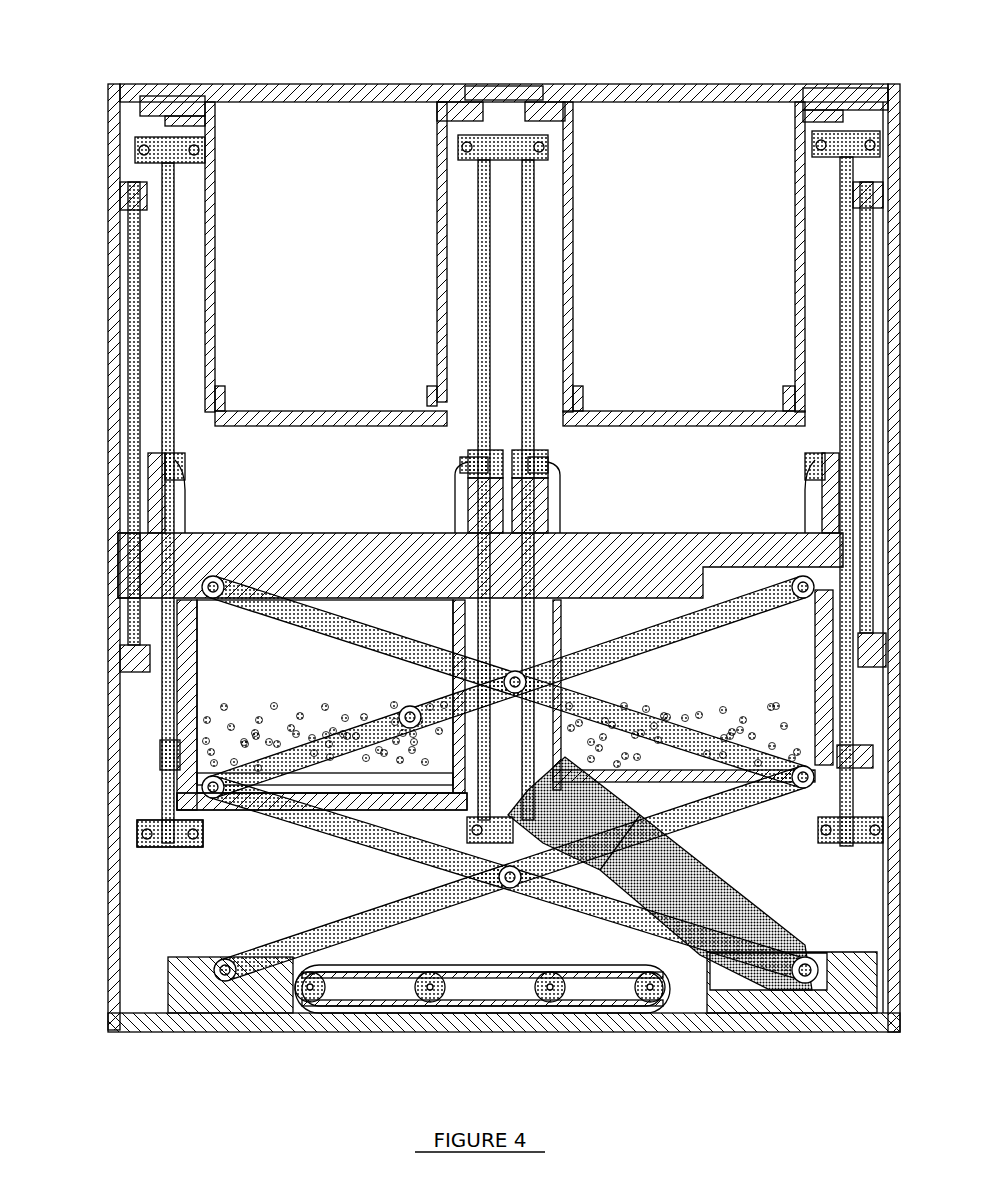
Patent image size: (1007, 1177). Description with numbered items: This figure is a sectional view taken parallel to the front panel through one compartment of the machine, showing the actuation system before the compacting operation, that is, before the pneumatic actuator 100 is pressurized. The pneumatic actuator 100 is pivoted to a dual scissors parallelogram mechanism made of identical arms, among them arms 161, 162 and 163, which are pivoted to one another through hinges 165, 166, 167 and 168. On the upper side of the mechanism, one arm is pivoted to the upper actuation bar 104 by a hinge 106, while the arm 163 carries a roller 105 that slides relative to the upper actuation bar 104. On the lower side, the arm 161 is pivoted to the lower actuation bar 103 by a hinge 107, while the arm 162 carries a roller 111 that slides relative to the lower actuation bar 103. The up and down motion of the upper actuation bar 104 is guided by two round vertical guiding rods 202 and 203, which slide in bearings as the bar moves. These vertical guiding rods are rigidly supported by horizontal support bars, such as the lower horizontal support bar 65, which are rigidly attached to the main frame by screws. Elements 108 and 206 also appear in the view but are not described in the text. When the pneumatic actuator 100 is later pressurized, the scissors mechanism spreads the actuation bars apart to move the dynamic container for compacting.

The lower horizontal support bar 65 is at (150, 845).
The pneumatic actuator 100 is at (690, 850).
The lower actuation bar 103 is at (230, 1032).
The upper actuation bar 104 is at (255, 560).
The roller 105 is at (800, 577).
The hinge 106 is at (202, 592).
The hinge 107 is at (268, 1032).
The tray 108 is at (190, 708).
The roller 111 is at (790, 985).
The arm 161 is at (600, 860).
The arm 162 is at (335, 1013).
The arm 163 is at (165, 748).
The hinge 165 is at (190, 797).
The hinge 166 is at (505, 885).
The hinge 167 is at (540, 470).
The hinge 168 is at (812, 788).
The vertical guiding rod 202 is at (866, 313).
The vertical guiding rod 203 is at (143, 297).
The side plate 206 is at (116, 540).